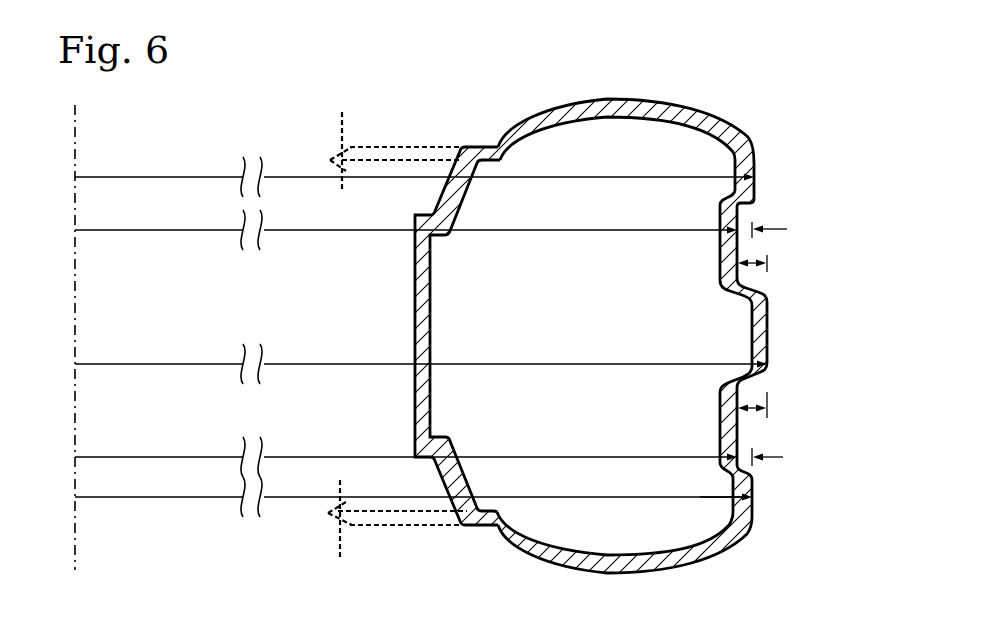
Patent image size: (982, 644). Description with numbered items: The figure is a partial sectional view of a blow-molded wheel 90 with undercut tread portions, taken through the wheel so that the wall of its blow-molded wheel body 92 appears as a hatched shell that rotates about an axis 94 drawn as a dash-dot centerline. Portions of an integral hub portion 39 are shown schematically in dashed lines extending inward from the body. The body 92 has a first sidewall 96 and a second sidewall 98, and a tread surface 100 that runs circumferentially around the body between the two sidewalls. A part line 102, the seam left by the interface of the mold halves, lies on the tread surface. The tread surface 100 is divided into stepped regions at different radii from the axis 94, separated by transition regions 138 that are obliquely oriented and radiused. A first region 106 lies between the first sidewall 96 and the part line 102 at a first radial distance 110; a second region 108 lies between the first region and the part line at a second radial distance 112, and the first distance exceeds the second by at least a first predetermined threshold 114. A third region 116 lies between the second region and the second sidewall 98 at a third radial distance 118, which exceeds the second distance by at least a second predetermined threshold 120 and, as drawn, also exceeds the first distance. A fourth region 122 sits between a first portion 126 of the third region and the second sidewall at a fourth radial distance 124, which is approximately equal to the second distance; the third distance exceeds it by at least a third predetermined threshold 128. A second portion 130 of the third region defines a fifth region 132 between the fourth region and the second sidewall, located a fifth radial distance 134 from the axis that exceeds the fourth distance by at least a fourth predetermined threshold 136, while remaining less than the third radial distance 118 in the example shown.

The hub portion 39 is at (390, 146).
The blow-molded wheel 90 is at (777, 65).
The blow-molded wheel body 92 is at (755, 111).
The axis 94 is at (77, 272).
The first sidewall 96 is at (607, 98).
The second sidewall 98 is at (617, 573).
The tread surface 100 is at (776, 307).
The part line 102 is at (774, 337).
The first region 106 is at (755, 162).
The second region 108 is at (739, 250).
The first radial distance 110 is at (555, 177).
The second radial distance 112 is at (488, 229).
The first predetermined threshold 114 is at (778, 224).
The third region 116 is at (768, 321).
The third radial distance 118 is at (488, 363).
The second predetermined threshold 120 is at (748, 277).
The fourth region 122 is at (739, 440).
The fourth radial distance 124 is at (488, 456).
The first portion of the third region 126 is at (768, 358).
The third predetermined threshold 128 is at (767, 392).
The second portion of the third region 130 is at (753, 488).
The fifth region 132 is at (753, 507).
The fifth radial distance 134 is at (583, 498).
The fourth predetermined threshold 136 is at (775, 450).
The transition regions 138 is at (740, 207).